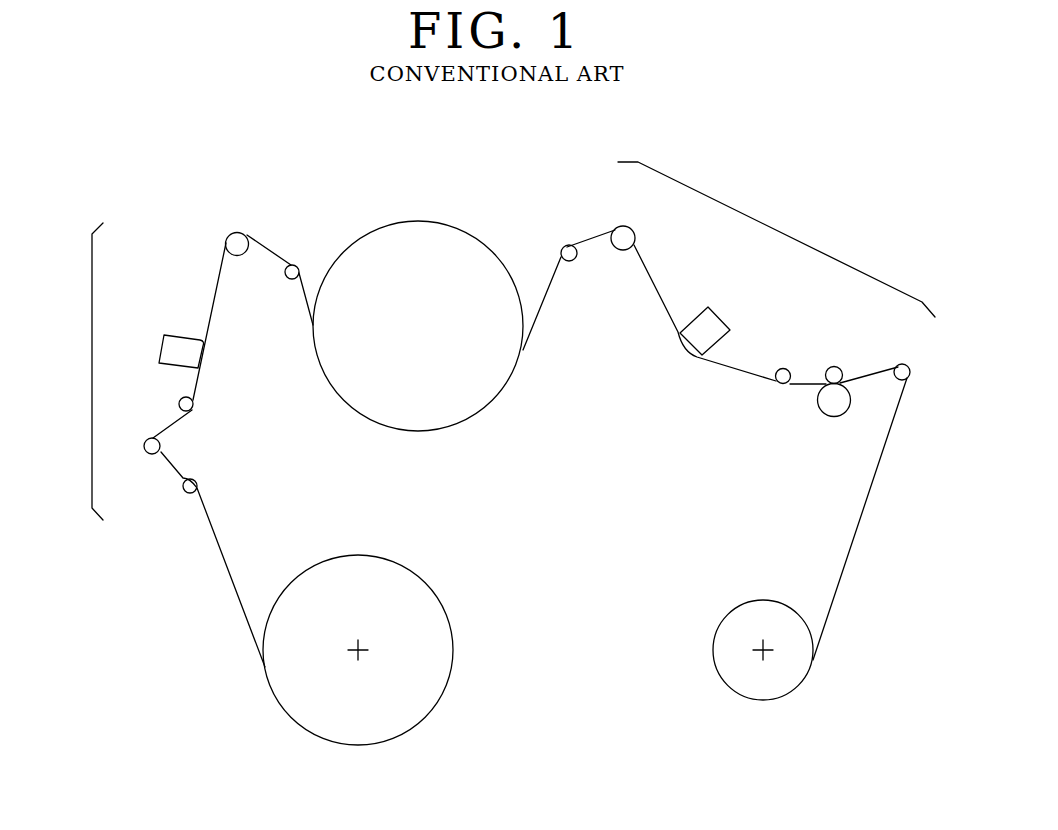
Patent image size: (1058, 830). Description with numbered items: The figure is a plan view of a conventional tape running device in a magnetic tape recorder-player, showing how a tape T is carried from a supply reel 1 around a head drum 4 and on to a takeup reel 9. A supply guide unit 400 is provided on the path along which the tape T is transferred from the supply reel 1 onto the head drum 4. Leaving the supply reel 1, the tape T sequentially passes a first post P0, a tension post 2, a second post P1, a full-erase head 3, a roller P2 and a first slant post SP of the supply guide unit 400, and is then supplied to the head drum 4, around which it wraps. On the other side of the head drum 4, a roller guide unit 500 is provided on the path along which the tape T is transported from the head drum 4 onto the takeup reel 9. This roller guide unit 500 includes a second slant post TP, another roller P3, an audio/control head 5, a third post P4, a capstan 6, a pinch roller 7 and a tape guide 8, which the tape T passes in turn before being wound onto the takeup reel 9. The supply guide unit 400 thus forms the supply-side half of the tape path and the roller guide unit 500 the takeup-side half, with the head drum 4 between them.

The supply reel 1 is at (280, 680).
The tension post 2 is at (152, 446).
The full-erase head 3 is at (164, 348).
The head drum 4 is at (430, 237).
The audio/control head 5 is at (710, 327).
The capstan 6 is at (834, 375).
The pinch roller 7 is at (842, 400).
The tape guide 8 is at (902, 372).
The takeup reel 9 is at (805, 670).
The supply guide unit 400 is at (72, 371).
The roller guide unit 500 is at (776, 239).
The tape T is at (235, 590).
The first post P0 is at (190, 486).
The second post P1 is at (186, 404).
The roller P2 is at (237, 244).
The roller P3 is at (625, 238).
The third post P4 is at (783, 376).
The first slant post SP is at (292, 272).
The second slant post TP is at (572, 252).